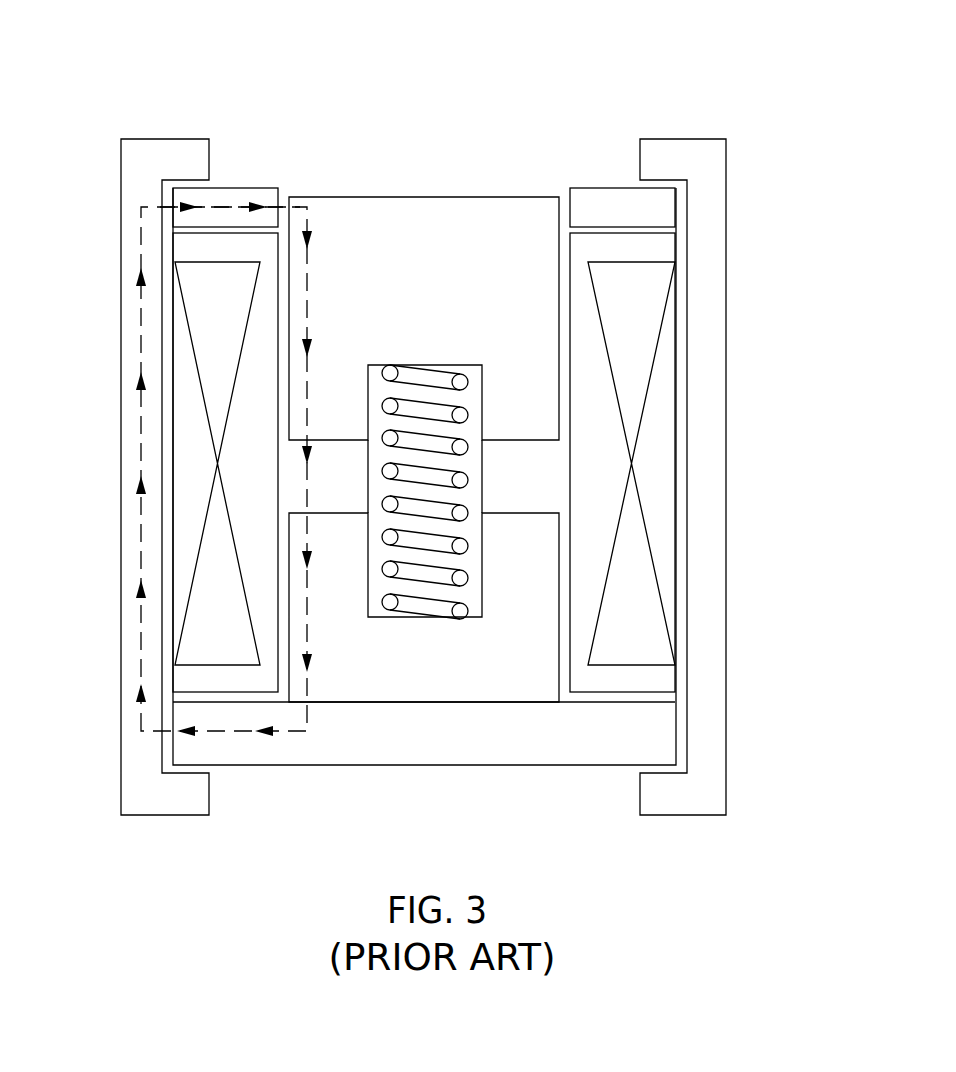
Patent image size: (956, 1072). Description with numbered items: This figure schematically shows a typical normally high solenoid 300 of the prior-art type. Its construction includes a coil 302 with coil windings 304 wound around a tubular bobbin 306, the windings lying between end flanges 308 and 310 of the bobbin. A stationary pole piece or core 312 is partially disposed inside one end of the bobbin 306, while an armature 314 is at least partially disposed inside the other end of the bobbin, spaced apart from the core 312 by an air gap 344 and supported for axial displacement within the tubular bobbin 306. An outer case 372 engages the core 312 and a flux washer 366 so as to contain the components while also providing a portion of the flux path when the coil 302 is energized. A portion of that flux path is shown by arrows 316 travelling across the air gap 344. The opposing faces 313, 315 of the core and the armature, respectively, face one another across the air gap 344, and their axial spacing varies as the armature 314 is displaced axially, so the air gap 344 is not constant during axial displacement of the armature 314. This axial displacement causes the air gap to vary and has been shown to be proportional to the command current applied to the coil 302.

The normally high solenoid 300 is at (733, 42).
The coil 302 is at (678, 391).
The coil windings 304 is at (655, 316).
The tubular bobbin 306 is at (585, 250).
The end flange 308 is at (663, 682).
The end flange 310 is at (662, 248).
The stationary pole piece or core 312 is at (352, 765).
The opposing face of the core 313 is at (520, 440).
The armature 314 is at (461, 197).
The opposing face of the armature 315 is at (518, 513).
The arrows 316 is at (141, 500).
The air gap 344 is at (326, 487).
The flux washer 366 is at (250, 188).
The outer case 372 is at (122, 331).